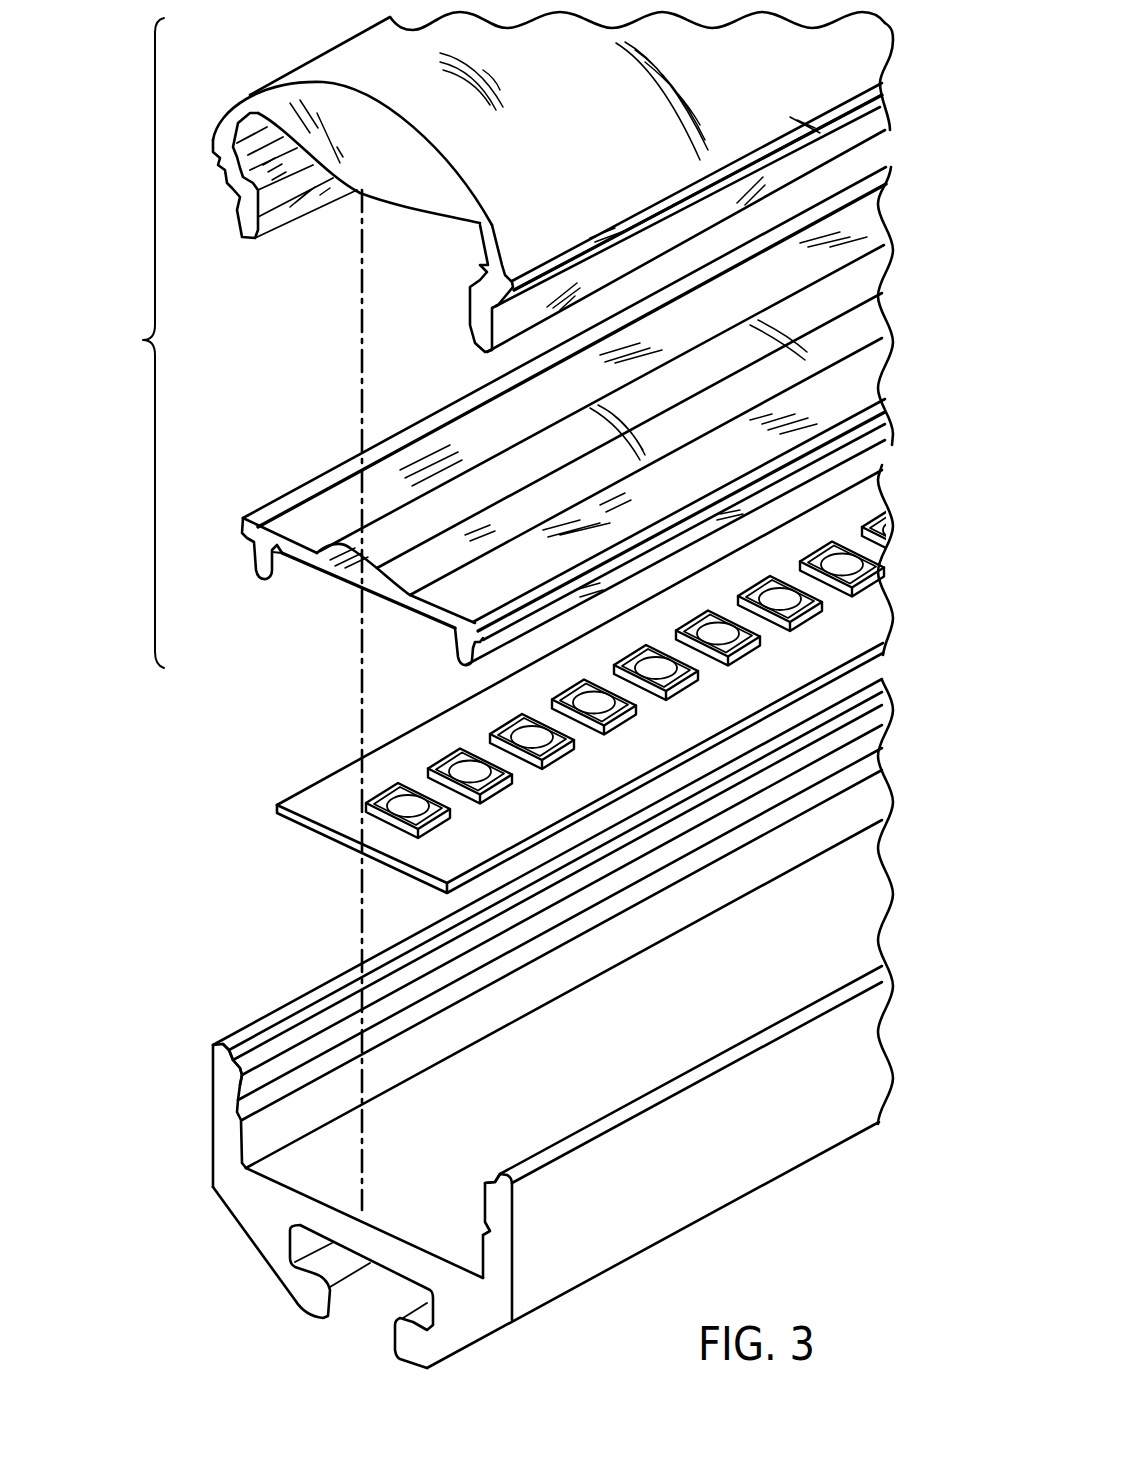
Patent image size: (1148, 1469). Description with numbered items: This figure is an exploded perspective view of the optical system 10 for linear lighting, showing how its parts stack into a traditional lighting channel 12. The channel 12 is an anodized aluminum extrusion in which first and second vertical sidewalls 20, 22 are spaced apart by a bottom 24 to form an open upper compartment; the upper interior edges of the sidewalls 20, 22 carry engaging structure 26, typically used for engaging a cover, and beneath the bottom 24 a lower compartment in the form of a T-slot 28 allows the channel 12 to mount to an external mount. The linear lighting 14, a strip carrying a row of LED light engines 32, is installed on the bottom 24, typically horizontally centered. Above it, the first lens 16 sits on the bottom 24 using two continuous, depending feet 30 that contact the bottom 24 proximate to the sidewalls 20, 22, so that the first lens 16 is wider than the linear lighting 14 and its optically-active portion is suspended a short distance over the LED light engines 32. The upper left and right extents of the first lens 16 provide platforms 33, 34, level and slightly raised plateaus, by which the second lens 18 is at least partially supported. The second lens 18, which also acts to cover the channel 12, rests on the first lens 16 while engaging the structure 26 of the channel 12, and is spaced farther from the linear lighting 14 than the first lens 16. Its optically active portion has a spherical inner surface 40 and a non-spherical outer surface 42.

The optical system 10 is at (143, 340).
The channel 12 is at (506, 1026).
The linear lighting 14 is at (601, 679).
The first lens 16 is at (545, 416).
The second lens 18 is at (553, 176).
The first vertical sidewall 20 is at (215, 1108).
The second vertical sidewall 22 is at (498, 1208).
The bottom 24 is at (400, 1200).
The engaging structure 26 is at (238, 1060).
The T-slot 28 is at (365, 1331).
The feet 30 is at (262, 564).
The LED light engines 32 is at (565, 706).
The platform 33 is at (275, 505).
The platform 34 is at (500, 610).
The inner surface 40 is at (390, 205).
The outer surface 42 is at (345, 60).